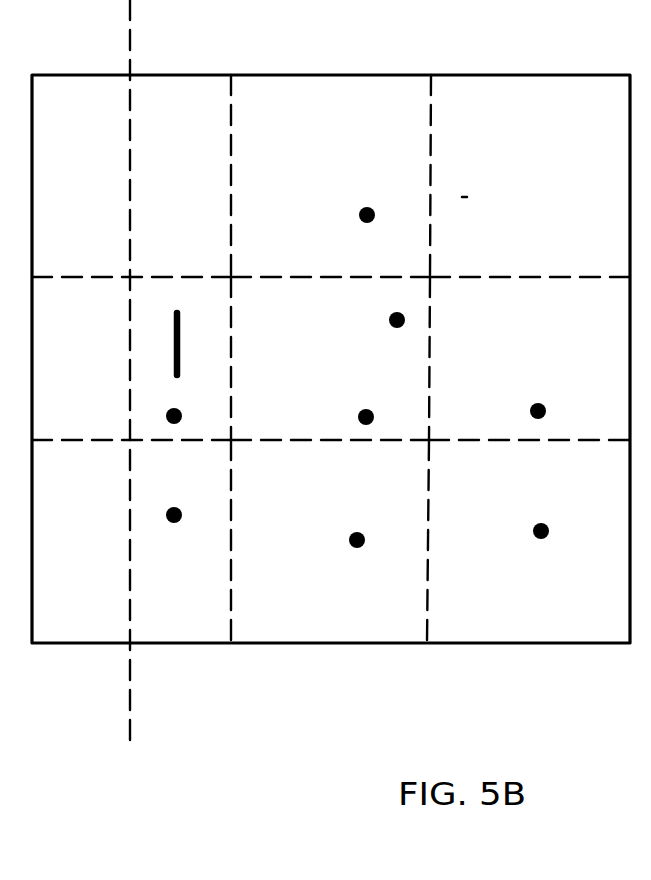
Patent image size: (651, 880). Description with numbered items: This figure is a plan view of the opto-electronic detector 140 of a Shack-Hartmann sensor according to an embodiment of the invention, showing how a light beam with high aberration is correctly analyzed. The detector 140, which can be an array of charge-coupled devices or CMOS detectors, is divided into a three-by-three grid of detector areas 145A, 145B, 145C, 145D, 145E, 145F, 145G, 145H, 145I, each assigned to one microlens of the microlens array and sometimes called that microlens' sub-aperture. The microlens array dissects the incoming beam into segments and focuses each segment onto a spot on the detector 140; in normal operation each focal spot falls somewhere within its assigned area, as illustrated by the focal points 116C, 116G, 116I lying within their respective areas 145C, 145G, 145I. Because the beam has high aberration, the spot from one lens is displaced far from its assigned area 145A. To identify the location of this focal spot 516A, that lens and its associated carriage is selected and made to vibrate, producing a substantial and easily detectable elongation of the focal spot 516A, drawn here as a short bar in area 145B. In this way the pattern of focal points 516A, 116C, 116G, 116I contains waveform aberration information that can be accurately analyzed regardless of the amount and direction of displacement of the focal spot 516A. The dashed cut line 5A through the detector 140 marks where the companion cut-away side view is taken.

The cut line 5A is at (130, 3).
The opto-electronic detector 140 is at (462, 644).
The detector area 145A is at (92, 104).
The detector area 145B is at (92, 306).
The detector area 145C is at (90, 473).
The detector area 145D is at (292, 104).
The detector area 145E is at (290, 306).
The detector area 145F is at (290, 473).
The detector area 145G is at (492, 104).
The detector area 145H is at (490, 306).
The detector area 145I is at (485, 471).
The focal spot 516A is at (178, 311).
The focal point 116C is at (175, 524).
The focal point 116G is at (391, 322).
The focal point 116I is at (542, 540).